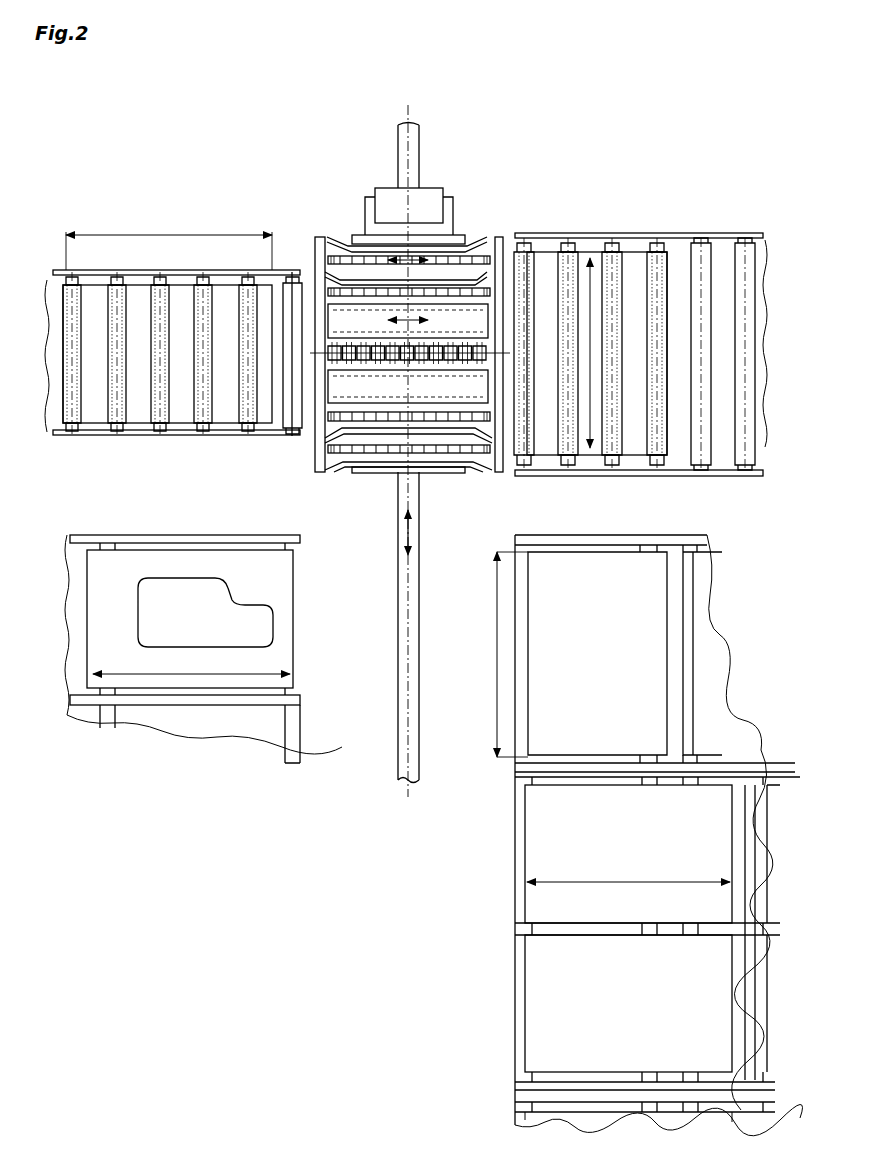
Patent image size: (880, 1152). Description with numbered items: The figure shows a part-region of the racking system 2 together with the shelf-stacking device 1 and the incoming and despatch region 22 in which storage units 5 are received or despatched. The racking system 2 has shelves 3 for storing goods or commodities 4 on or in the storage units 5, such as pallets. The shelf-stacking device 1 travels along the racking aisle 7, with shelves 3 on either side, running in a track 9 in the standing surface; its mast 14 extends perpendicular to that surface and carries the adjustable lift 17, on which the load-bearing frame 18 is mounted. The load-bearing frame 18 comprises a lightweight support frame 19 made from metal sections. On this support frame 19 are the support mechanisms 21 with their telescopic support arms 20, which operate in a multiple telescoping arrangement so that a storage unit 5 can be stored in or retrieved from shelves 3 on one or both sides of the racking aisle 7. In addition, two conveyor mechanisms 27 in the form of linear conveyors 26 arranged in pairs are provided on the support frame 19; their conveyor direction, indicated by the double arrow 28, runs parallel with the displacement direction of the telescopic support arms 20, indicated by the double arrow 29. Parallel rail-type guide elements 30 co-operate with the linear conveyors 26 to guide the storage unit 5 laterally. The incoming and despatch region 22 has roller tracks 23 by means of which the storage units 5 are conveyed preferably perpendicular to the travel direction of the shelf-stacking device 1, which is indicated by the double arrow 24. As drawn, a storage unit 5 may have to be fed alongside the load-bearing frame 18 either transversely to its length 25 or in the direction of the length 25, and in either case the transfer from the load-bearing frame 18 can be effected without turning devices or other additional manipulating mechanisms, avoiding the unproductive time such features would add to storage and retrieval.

The shelf-stacking device 1 is at (512, 192).
The racking system 2 is at (203, 726).
The shelves 3 is at (137, 700).
The commodities 4 is at (220, 630).
The storage unit 5 is at (173, 345).
The racking aisle 7 is at (564, 835).
The track 9 is at (413, 755).
The mast 14 is at (428, 200).
The lift 17 is at (450, 200).
The load-bearing frame 18 is at (350, 248).
The support frame 19 is at (335, 283).
The telescopic support arms 20 is at (385, 387).
The support mechanisms 21 is at (527, 242).
The incoming and despatch region 22 is at (658, 317).
The roller tracks 23 is at (181, 345).
The double arrow 24 is at (408, 532).
The length 25 is at (213, 235).
The linear conveyors 26 is at (330, 256).
The conveyor mechanisms 27 is at (316, 463).
The double arrow 28 is at (407, 257).
The double arrow 29 is at (413, 318).
The rail-type guide elements 30 is at (349, 219).